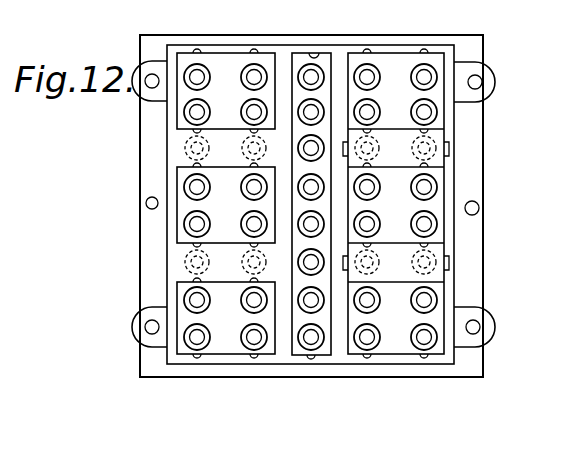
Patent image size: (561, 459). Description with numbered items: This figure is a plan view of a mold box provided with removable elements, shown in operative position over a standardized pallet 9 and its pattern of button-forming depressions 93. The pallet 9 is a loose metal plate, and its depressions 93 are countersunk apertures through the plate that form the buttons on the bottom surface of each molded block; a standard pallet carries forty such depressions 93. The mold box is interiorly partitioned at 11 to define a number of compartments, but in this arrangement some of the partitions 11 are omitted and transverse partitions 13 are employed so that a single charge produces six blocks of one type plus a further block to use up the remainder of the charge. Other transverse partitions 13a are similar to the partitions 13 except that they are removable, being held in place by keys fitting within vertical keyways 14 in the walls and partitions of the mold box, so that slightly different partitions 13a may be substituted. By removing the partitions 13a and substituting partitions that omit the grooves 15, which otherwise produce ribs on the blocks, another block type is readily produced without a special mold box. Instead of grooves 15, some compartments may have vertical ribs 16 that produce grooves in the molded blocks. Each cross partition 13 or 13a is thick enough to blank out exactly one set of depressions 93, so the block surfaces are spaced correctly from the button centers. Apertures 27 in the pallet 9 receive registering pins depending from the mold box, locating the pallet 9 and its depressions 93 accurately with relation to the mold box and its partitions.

The pallet 9 is at (148, 275).
The partitions 11 is at (340, 337).
The partitions 13 is at (210, 140).
The removable transverse partitions 13a is at (393, 253).
The keyways 14 is at (448, 150).
The grooves 15 is at (425, 129).
The vertical ribs 16 is at (318, 55).
The apertures 27 is at (479, 207).
The depressions 93 is at (187, 282).